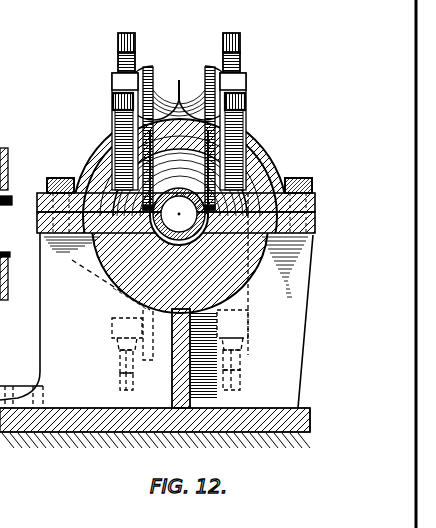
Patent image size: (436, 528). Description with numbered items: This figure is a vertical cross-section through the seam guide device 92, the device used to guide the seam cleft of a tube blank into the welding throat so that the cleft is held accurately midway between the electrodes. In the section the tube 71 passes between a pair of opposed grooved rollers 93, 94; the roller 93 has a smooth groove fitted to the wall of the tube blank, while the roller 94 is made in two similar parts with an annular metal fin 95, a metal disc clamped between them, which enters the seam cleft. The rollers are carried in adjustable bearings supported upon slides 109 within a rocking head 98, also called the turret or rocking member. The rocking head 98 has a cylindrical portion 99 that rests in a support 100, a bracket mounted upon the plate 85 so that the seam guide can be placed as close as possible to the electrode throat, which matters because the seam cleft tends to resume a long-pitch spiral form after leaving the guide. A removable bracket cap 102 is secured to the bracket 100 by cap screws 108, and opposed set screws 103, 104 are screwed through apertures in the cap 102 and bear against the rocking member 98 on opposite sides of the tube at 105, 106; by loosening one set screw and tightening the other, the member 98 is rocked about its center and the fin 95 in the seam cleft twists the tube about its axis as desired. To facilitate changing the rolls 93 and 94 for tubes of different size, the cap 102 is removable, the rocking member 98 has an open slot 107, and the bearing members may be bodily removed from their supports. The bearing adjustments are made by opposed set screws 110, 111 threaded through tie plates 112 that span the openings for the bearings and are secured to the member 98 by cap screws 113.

The tube 71 is at (33, 321).
The plate 85 is at (66, 445).
The seam guide device 92 is at (163, 70).
The grooved roller 93 is at (182, 358).
The grooved roller 94 is at (198, 70).
The annular metal fin 95 is at (180, 80).
The rocking head 98 is at (120, 308).
The cylindrical portion 99 is at (113, 288).
The support 100 is at (21, 366).
The bracket cap 102 is at (252, 160).
The set screw 103 is at (246, 95).
The set screw 104 is at (113, 98).
The bearing point 105 is at (262, 165).
The bearing point 106 is at (120, 186).
The open slot 107 is at (88, 243).
The cap screws 108 is at (60, 178).
The slides 109 is at (13, 219).
The set screw 110 is at (121, 32).
The set screw 111 is at (120, 382).
The tie plates 112 is at (112, 78).
The cap screws 113 is at (114, 54).